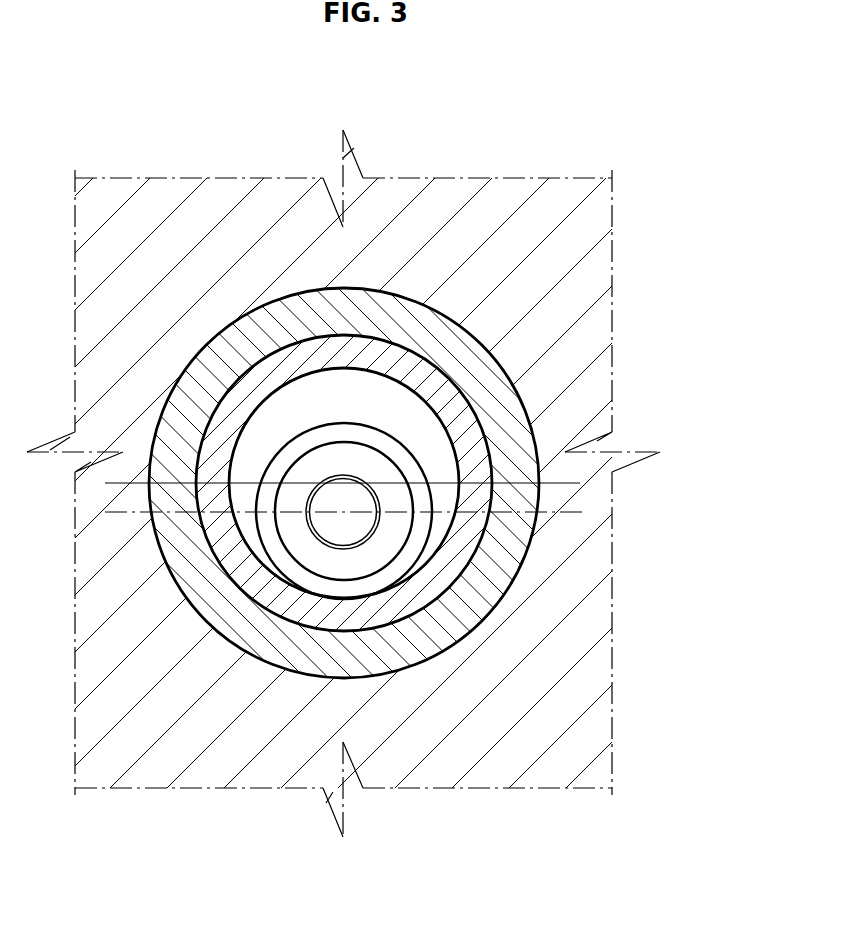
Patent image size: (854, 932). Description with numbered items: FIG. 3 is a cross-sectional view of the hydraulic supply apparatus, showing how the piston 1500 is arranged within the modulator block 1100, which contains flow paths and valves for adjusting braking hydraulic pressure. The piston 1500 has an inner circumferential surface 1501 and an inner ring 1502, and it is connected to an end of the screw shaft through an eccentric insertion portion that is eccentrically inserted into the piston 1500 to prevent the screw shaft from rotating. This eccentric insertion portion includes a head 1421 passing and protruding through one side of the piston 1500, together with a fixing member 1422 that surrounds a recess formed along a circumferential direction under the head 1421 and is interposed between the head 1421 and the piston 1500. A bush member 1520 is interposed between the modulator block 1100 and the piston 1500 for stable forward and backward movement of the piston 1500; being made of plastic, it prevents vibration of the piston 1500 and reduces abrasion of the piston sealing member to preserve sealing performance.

The modulator block 1100 is at (560, 685).
The piston 1500 is at (427, 391).
The inner circumferential surface 1501 is at (314, 395).
The inner ring 1502 is at (367, 368).
The bush member 1520 is at (483, 370).
The head 1421 is at (323, 557).
The fixing member 1422 is at (387, 578).